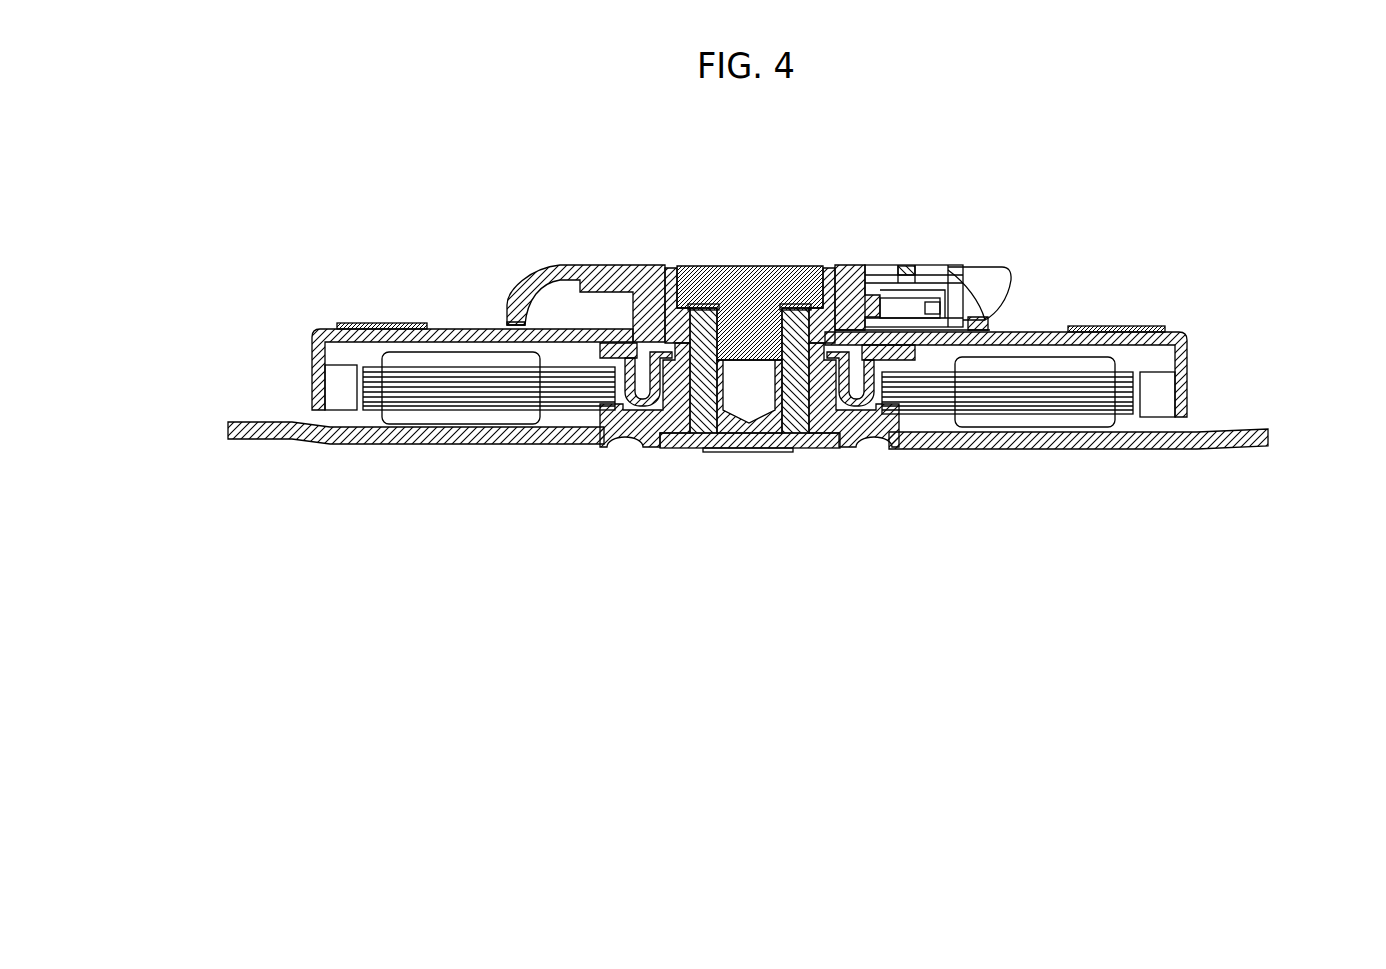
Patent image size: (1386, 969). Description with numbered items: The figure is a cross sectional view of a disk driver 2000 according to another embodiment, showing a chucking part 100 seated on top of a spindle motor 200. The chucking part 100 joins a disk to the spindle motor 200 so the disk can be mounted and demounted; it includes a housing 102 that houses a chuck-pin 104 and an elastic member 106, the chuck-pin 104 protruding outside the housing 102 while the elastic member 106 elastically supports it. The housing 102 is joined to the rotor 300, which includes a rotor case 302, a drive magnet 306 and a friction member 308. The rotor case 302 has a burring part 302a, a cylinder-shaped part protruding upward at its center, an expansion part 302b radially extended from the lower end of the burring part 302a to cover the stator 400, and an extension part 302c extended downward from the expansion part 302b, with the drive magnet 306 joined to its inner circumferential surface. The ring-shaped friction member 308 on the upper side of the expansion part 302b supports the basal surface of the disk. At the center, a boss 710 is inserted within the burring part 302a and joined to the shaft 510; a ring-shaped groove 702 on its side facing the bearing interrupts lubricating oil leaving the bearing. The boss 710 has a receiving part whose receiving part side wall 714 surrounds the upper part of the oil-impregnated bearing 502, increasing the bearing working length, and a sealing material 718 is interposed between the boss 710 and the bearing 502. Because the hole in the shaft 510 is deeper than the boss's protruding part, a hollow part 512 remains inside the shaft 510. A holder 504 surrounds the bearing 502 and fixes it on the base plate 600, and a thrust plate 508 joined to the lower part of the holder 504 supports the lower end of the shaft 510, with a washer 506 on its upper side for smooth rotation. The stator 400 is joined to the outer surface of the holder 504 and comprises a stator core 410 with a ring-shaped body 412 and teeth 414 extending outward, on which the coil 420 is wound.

The disk driver 2000 is at (1172, 188).
The chucking part 100 is at (1045, 276).
The housing 102 is at (561, 265).
The chuck-pin 104 is at (980, 285).
The elastic member 106 is at (923, 295).
The spindle motor 200 is at (1228, 366).
The rotor 300 is at (123, 290).
The rotor case 302 is at (212, 230).
The burring part 302a is at (668, 303).
The expansion part 302b is at (668, 310).
The extension part 302c is at (312, 352).
The drive magnet 306 is at (340, 397).
The friction member 308 is at (1127, 327).
The stator 400 is at (498, 647).
The stator core 410 is at (552, 578).
The ring-shaped body 412 is at (593, 445).
The teeth 414 is at (475, 420).
The coil 420 is at (428, 422).
The oil-impregnated bearing 502 is at (802, 450).
The holder 504 is at (888, 448).
The washer 506 is at (765, 453).
The thrust plate 508 is at (822, 450).
The shaft 510 is at (697, 453).
The hollow part 512 is at (745, 389).
The base plate 600 is at (943, 450).
The ring-shaped groove 702 is at (813, 305).
The boss 710 is at (706, 278).
The receiving part side wall 714 is at (830, 298).
The sealing material 718 is at (600, 298).